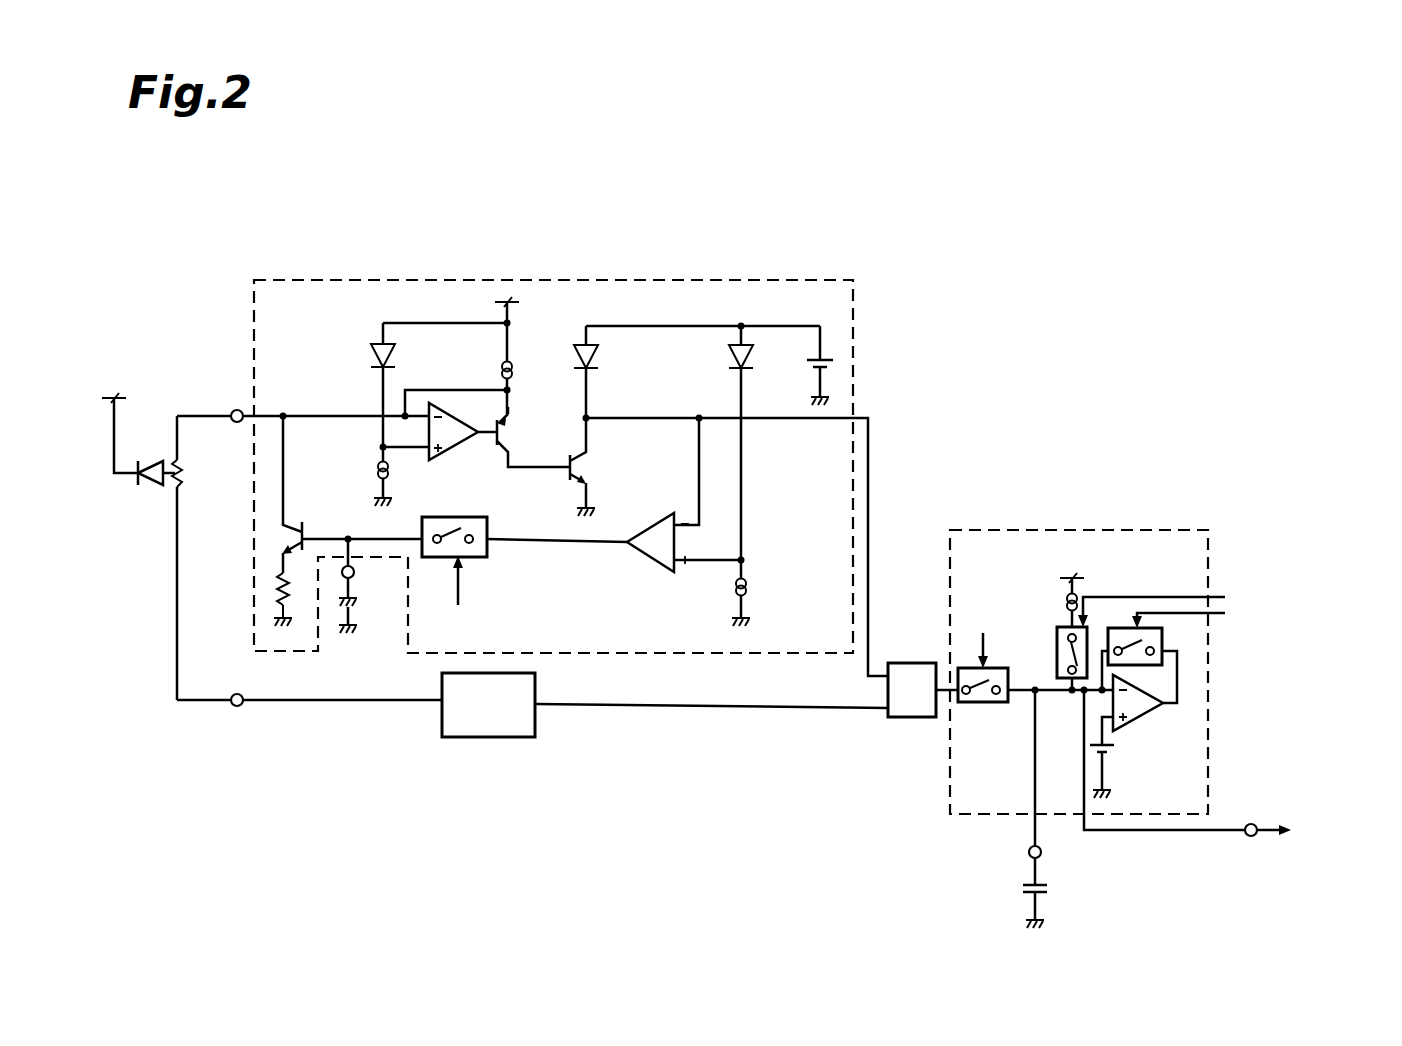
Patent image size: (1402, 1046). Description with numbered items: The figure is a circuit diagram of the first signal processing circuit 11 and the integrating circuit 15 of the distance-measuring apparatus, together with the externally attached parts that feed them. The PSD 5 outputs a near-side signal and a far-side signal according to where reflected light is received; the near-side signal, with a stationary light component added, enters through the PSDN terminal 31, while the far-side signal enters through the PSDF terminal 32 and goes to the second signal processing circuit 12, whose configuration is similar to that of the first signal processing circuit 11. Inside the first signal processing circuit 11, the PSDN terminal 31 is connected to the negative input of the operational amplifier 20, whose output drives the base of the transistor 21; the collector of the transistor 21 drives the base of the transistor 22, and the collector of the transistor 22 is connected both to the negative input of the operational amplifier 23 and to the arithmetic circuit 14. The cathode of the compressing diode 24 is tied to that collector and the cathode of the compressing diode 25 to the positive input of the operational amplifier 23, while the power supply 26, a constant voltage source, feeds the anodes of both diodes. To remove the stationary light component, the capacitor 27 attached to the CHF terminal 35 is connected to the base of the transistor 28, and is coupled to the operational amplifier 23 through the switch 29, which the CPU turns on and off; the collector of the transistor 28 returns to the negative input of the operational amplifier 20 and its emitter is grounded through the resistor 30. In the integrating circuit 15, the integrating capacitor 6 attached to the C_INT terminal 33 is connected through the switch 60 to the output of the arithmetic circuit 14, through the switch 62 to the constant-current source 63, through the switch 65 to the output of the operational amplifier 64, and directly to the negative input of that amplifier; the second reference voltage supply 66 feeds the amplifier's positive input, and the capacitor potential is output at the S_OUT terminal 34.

The PSD 5 is at (158, 465).
The integrating capacitor 6 is at (1050, 888).
The first signal processing circuit 11 is at (472, 280).
The second signal processing circuit 12 is at (480, 737).
The arithmetic circuit 14 is at (918, 663).
The integrating circuit 15 is at (1143, 530).
The operational amplifier 20 is at (455, 449).
The transistor 21 is at (490, 447).
The transistor 22 is at (562, 479).
The operational amplifier 23 is at (647, 559).
The compressing diode 24 is at (573, 353).
The compressing diode 25 is at (729, 358).
The power supply 26 is at (831, 356).
The capacitor for removing the stationary light 27 is at (360, 602).
The transistor for removal of stationary light 28 is at (312, 524).
The switch 29 is at (489, 553).
The resistor 30 is at (278, 592).
The PSDN terminal 31 is at (233, 411).
The PSDF terminal 32 is at (233, 706).
The C_INT terminal 33 is at (1028, 852).
The S_OUT terminal 34 is at (1251, 836).
The CHF terminal 35 is at (339, 578).
The switch 60 is at (988, 702).
The switch 62 is at (1062, 627).
The constant-current source 63 is at (1081, 592).
The operational amplifier 64 is at (1150, 712).
The switch 65 is at (1163, 645).
The second reference voltage supply 66 is at (1110, 745).